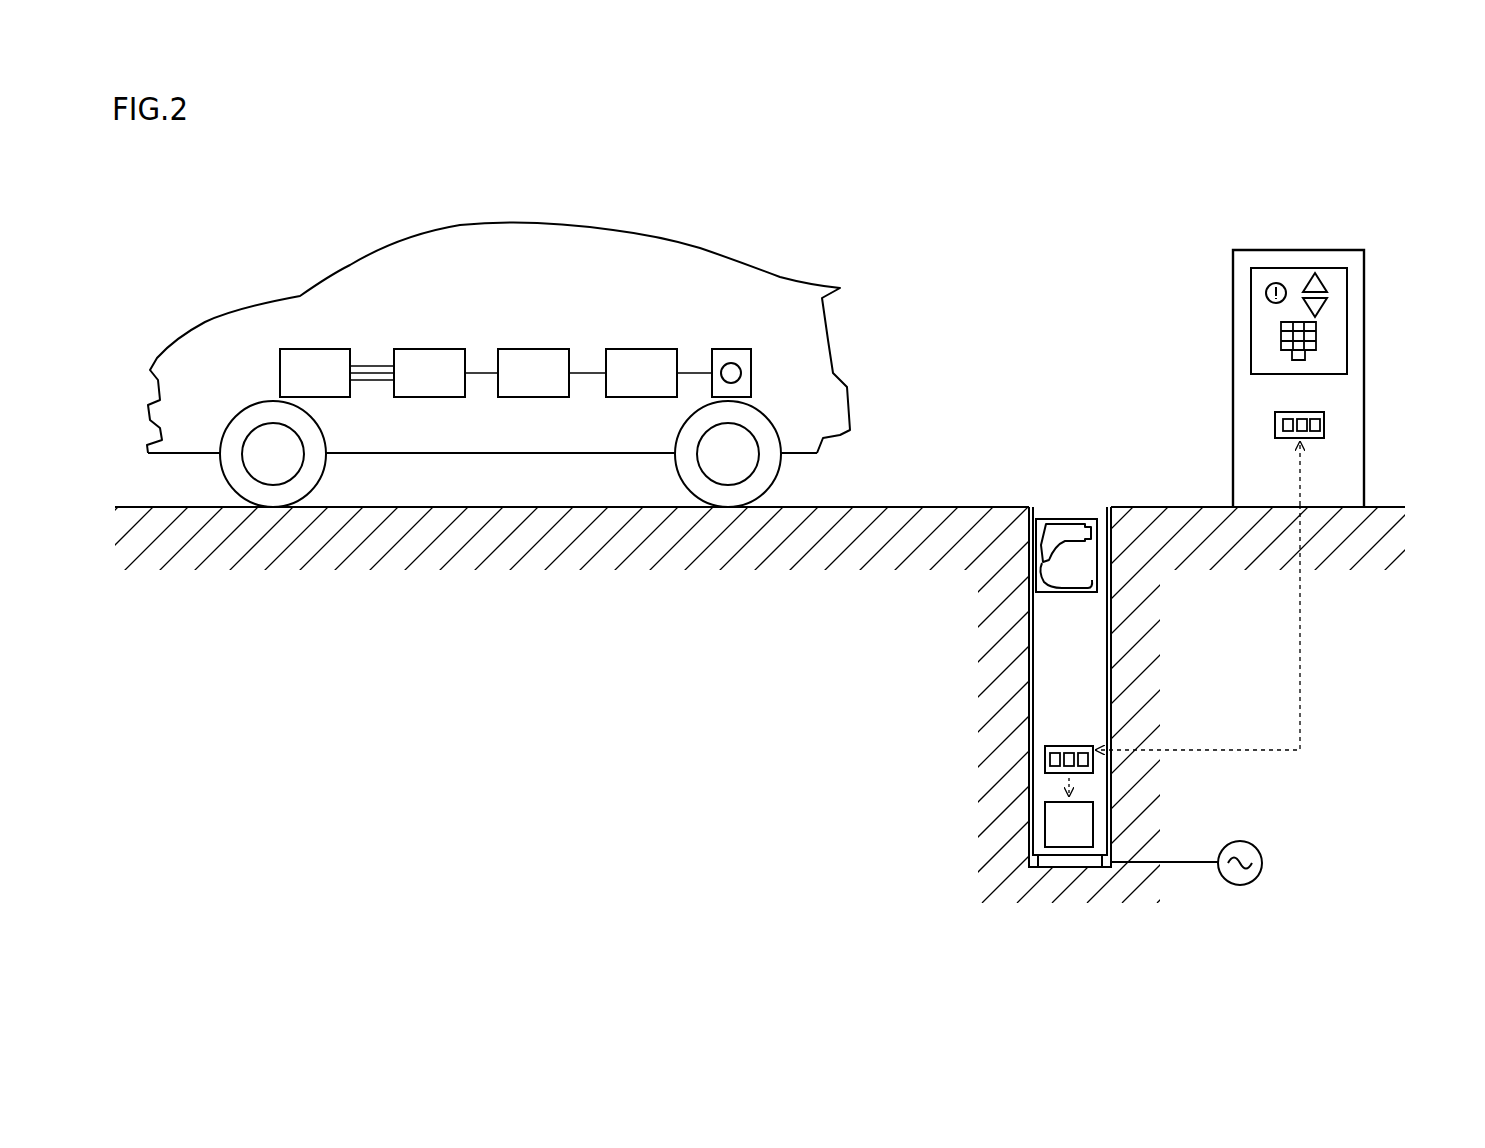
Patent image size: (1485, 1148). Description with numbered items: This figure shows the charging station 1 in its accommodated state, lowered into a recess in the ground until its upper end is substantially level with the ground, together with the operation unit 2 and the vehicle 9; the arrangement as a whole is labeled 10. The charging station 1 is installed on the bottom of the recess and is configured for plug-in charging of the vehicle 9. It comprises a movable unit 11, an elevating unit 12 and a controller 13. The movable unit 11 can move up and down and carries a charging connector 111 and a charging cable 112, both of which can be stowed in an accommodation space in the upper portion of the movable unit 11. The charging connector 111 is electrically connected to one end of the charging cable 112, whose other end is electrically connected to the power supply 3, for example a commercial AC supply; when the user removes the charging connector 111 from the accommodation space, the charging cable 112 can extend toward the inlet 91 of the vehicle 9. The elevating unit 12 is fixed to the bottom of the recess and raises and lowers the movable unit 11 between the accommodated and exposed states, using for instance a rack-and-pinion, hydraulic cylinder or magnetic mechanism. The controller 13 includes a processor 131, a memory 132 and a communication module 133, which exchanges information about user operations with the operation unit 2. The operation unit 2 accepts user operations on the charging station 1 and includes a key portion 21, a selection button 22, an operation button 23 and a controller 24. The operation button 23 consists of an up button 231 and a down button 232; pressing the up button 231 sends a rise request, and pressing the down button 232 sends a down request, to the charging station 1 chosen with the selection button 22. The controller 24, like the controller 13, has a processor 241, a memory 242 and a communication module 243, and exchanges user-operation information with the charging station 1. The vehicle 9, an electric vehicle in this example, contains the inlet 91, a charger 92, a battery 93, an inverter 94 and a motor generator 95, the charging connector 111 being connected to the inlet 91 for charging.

The charging system 10 is at (1000, 203).
The vehicle 9 is at (728, 247).
The motor generator 95 is at (313, 349).
The inverter 94 is at (429, 349).
The battery 93 is at (533, 349).
The charger 92 is at (641, 349).
The inlet 91 is at (731, 349).
The charging station 1 is at (1077, 493).
The movable unit 11 is at (1095, 507).
The charging connector 111 is at (1072, 540).
The charging cable 112 is at (1067, 586).
The elevating unit 12 is at (1093, 826).
The controller 13 is at (1093, 768).
The processor 131 is at (1055, 770).
The memory 132 is at (1068, 752).
The communication module 133 is at (1084, 753).
The operation unit 2 is at (1320, 250).
The key portion 21 is at (1266, 293).
The selection button 22 is at (1318, 338).
The operation button 23 is at (1424, 273).
The up button 231 is at (1333, 280).
The down button 232 is at (1333, 302).
The controller 24 is at (1318, 412).
The processor 241 is at (1286, 433).
The memory 242 is at (1297, 413).
The communication module 243 is at (1314, 433).
The power supply 3 is at (1256, 845).